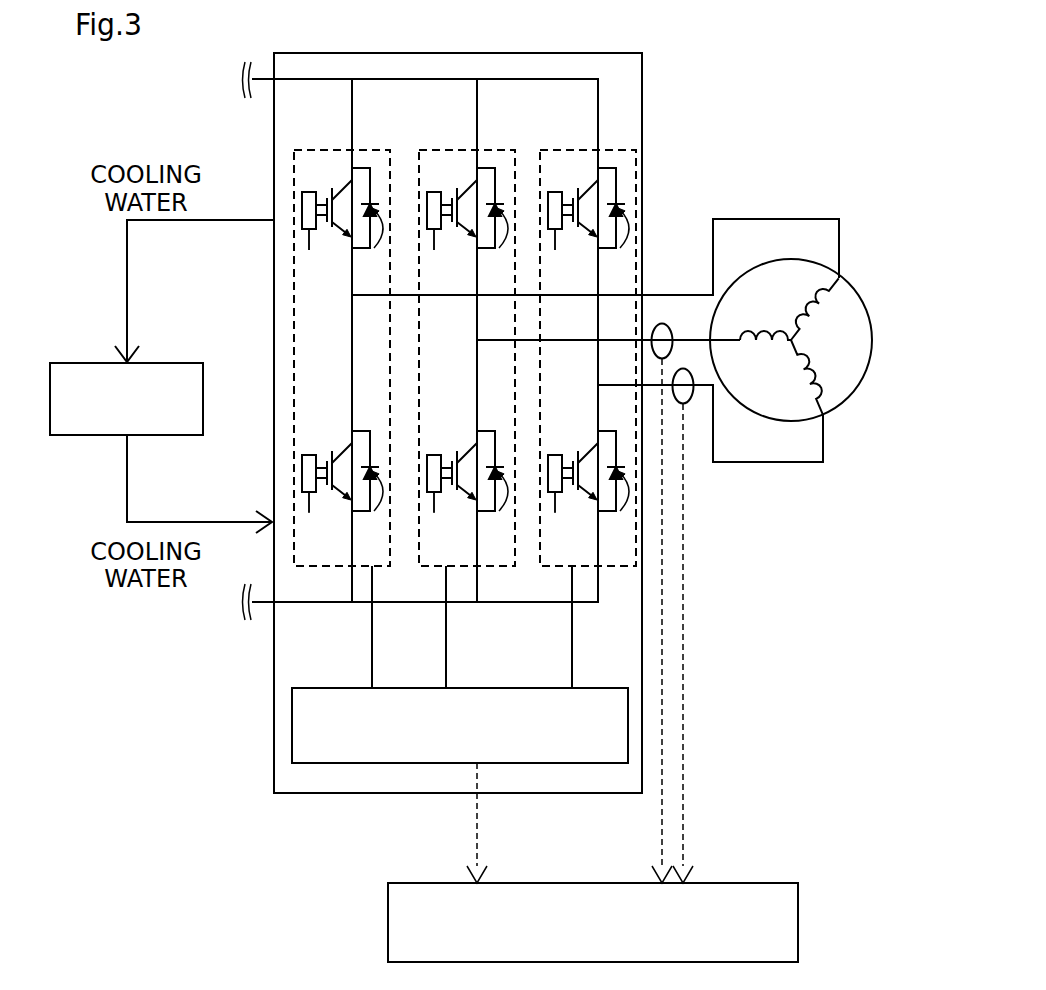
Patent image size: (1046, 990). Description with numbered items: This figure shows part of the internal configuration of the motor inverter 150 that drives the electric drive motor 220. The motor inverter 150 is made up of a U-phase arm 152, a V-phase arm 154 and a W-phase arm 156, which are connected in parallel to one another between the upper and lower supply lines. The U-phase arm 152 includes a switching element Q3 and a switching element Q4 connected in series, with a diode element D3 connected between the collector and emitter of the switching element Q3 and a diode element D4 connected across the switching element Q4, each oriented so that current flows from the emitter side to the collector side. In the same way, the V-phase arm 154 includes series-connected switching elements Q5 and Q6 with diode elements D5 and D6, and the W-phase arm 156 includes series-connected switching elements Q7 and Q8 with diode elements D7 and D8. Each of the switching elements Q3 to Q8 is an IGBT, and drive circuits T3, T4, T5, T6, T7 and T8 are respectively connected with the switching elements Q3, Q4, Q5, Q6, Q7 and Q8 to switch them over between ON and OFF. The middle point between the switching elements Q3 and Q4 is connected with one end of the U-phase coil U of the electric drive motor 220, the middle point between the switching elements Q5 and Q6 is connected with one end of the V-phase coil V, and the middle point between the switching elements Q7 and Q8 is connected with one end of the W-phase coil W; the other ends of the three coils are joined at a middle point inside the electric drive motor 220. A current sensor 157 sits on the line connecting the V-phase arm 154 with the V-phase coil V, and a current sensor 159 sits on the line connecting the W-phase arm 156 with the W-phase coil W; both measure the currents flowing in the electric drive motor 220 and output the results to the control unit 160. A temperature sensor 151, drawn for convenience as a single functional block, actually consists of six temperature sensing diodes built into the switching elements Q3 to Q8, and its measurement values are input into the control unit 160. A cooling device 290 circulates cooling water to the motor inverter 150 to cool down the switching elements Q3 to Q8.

The motor inverter 150 is at (642, 73).
The temperature sensor 151 is at (320, 688).
The U-phase arm 152 is at (315, 150).
The V-phase arm 154 is at (437, 150).
The W-phase arm 156 is at (561, 150).
The current sensor 157 is at (662, 323).
The current sensor 159 is at (683, 369).
The control unit 160 is at (388, 918).
The electric drive motor 220 is at (791, 288).
The cooling device 290 is at (173, 362).
The switching element Q3 is at (327, 198).
The switching element Q4 is at (327, 461).
The switching element Q5 is at (452, 198).
The switching element Q6 is at (452, 461).
The switching element Q7 is at (573, 198).
The switching element Q8 is at (573, 461).
The diode element D3 is at (370, 222).
The diode element D4 is at (370, 485).
The diode element D5 is at (495, 222).
The diode element D6 is at (495, 485).
The diode element D7 is at (616, 222).
The diode element D8 is at (616, 485).
The drive circuit T3 is at (314, 251).
The drive circuit T4 is at (314, 514).
The drive circuit T5 is at (439, 251).
The drive circuit T6 is at (439, 514).
The drive circuit T7 is at (560, 251).
The drive circuit T8 is at (560, 514).
The U-phase coil U is at (822, 298).
The V-phase coil V is at (754, 330).
The W-phase coil W is at (822, 390).